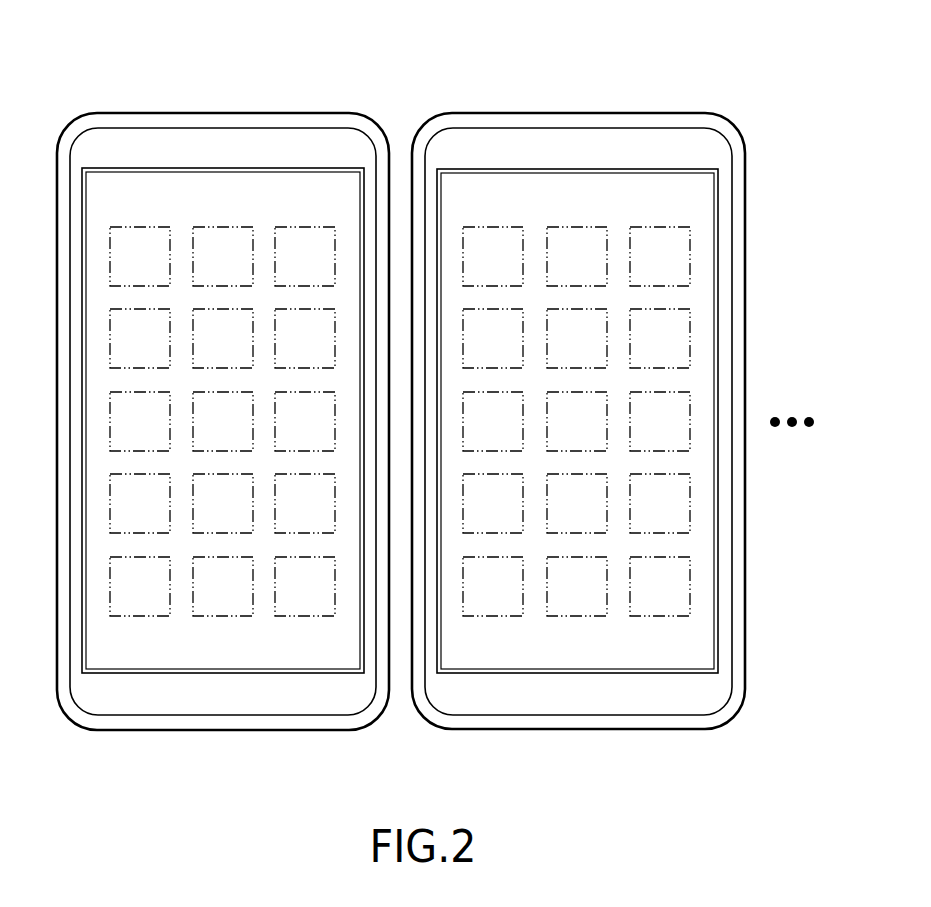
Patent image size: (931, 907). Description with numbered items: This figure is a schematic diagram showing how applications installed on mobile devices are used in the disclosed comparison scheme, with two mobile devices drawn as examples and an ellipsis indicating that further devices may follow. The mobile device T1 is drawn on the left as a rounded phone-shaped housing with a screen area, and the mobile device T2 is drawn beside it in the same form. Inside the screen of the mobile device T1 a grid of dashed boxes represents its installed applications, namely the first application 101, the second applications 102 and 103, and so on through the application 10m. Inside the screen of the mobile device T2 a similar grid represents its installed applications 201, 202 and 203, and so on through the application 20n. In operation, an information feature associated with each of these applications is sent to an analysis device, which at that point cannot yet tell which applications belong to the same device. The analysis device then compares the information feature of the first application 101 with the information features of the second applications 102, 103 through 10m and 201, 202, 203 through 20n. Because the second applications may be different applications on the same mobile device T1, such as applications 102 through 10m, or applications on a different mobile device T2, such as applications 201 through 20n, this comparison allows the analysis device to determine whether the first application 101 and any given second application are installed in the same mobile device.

The mobile device T1 is at (266, 113).
The mobile device T2 is at (621, 113).
The first application 101 is at (140, 227).
The second application 102 is at (222, 227).
The second application 103 is at (305, 227).
The second application 10m is at (307, 616).
The second application 201 is at (493, 227).
The second application 202 is at (575, 227).
The second application 203 is at (658, 227).
The second application 20n is at (660, 616).